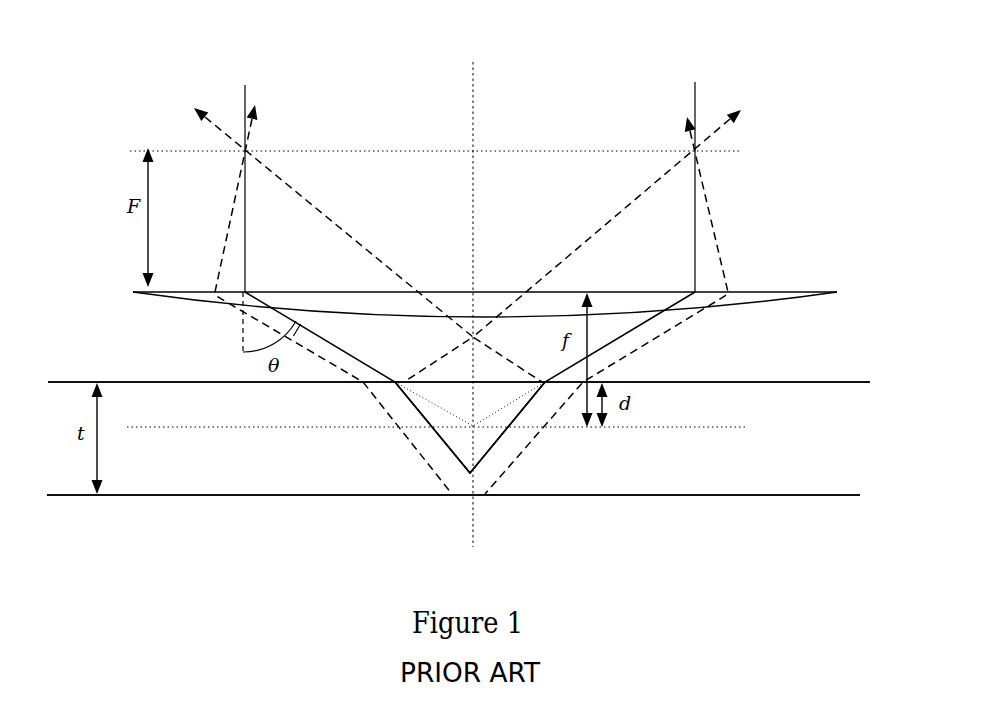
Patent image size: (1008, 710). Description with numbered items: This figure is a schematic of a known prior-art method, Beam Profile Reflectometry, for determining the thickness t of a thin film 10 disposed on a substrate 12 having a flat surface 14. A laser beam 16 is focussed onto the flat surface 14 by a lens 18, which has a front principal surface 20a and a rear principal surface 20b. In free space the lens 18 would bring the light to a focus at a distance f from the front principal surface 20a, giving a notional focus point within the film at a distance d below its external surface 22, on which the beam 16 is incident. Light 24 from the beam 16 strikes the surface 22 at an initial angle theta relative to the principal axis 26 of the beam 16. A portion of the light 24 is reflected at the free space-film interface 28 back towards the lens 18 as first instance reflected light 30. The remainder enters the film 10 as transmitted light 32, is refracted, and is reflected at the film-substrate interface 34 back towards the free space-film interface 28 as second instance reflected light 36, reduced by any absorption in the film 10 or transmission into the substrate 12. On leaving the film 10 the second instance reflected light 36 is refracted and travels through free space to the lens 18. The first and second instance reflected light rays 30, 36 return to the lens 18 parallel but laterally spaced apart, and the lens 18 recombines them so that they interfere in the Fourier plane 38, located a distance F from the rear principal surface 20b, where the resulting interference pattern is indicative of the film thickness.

The thin film 10 is at (794, 469).
The substrate 12 is at (536, 553).
The flat surface 14 is at (807, 496).
The laser beam 16 is at (592, 107).
The lens 18 is at (465, 286).
The front principal surface 20a is at (177, 307).
The rear principal surface 20b is at (183, 290).
The external surface 22 is at (120, 382).
The light 24 is at (617, 337).
The principal axis 26 is at (473, 110).
The free space-film interface 28 is at (790, 383).
The first instance reflected light 30 is at (472, 232).
The transmitted light 32 is at (447, 450).
The film-substrate interface 34 is at (693, 497).
The second instance reflected light 36 is at (417, 450).
The Fourier plane 38 is at (425, 151).